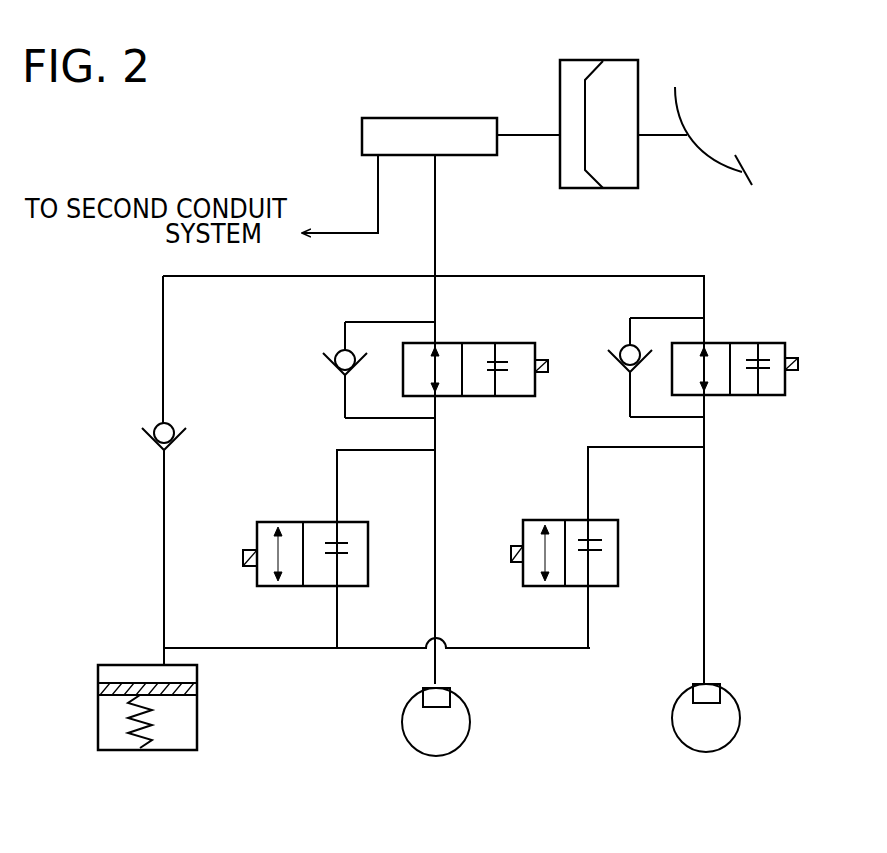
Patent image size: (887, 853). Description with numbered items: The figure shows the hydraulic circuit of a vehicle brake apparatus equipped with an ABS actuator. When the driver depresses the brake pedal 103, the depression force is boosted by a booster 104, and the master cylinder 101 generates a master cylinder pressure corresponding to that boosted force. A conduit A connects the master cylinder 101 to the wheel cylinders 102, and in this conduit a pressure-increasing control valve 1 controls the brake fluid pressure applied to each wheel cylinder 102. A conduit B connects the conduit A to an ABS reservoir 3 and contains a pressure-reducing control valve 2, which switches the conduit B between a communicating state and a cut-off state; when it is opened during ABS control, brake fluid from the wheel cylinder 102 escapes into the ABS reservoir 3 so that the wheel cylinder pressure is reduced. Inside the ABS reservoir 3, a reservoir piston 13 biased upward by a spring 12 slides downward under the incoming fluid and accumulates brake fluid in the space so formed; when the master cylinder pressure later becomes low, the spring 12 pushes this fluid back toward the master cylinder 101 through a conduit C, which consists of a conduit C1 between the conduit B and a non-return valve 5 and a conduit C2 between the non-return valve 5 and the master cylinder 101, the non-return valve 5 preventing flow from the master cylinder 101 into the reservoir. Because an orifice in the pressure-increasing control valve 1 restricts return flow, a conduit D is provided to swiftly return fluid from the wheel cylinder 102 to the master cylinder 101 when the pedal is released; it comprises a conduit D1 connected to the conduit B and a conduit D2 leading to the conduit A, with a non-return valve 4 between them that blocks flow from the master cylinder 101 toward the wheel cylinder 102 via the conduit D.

The pressure-increasing control valve 1 is at (497, 397).
The pressure-reducing control valve 2 is at (370, 578).
The ABS reservoir 3 is at (173, 693).
The non-return valve 4 is at (330, 368).
The non-return valve 5 is at (158, 422).
The spring 12 is at (135, 722).
The reservoir piston 13 is at (128, 690).
The master cylinder 101 is at (412, 118).
The wheel cylinder 102 is at (440, 757).
The brake pedal 103 is at (702, 148).
The booster 104 is at (620, 60).
The conduit A is at (435, 204).
The conduit B is at (336, 500).
The conduit C is at (160, 307).
The conduit C1 is at (162, 530).
The conduit C2 is at (213, 278).
The conduit D is at (343, 410).
The conduit D1 is at (375, 420).
The conduit D2 is at (392, 320).